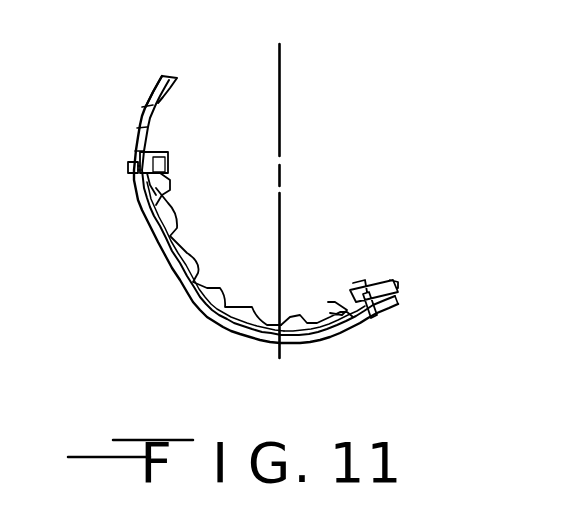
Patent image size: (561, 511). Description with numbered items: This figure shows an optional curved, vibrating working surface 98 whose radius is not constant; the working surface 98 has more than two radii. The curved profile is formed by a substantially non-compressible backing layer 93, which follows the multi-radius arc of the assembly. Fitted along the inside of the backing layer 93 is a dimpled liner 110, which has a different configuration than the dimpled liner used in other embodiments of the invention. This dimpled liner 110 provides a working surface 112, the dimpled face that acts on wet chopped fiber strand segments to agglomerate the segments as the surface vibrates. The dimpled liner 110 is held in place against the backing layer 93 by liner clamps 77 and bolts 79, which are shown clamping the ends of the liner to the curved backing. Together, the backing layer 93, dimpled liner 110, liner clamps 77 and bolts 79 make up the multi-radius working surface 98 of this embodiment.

The substantially non-compressible backing layer 93 is at (200, 303).
The working surface 98 is at (155, 110).
The liner clamp 77 is at (163, 150).
The bolt 79 is at (168, 168).
The dimpled liner 110 is at (217, 285).
The working surface 112 is at (290, 310).